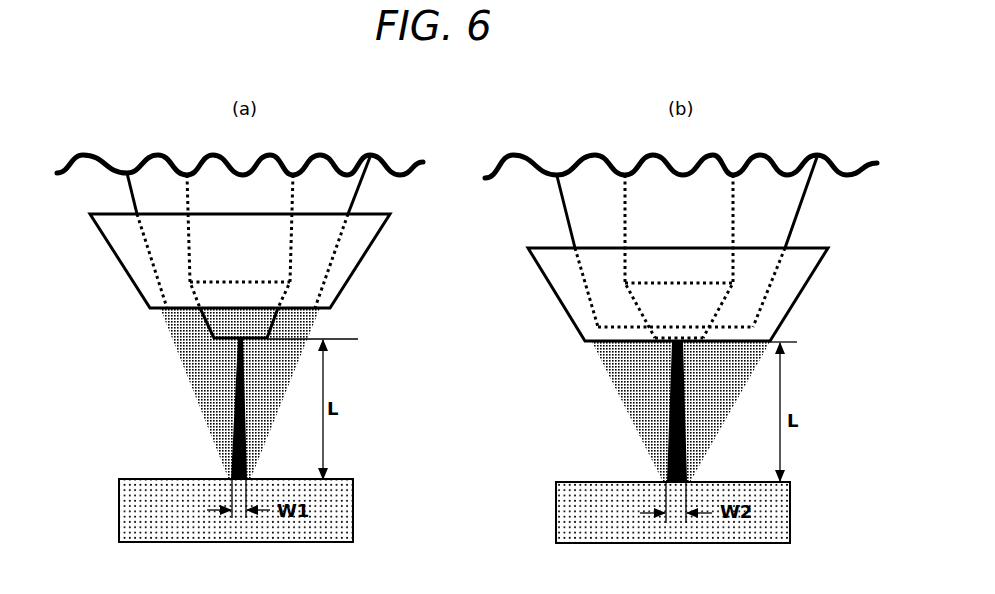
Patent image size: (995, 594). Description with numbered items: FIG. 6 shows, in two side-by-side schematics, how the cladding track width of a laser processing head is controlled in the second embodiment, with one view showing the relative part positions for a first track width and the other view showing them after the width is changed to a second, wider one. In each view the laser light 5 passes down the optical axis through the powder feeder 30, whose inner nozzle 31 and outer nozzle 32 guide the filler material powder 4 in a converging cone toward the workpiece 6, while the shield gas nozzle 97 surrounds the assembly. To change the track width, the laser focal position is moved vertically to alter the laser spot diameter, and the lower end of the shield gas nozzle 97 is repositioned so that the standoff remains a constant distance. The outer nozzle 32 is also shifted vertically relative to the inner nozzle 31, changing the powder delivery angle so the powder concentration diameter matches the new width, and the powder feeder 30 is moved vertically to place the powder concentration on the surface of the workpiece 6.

The filler material powder 4 is at (207, 413).
The laser light 5 is at (235, 359).
The workpiece 6 is at (135, 510).
The powder feeder 30 is at (388, 272).
The inner nozzle 31 is at (138, 189).
The outer nozzle 32 is at (112, 225).
The shield gas nozzle 97 is at (205, 256).